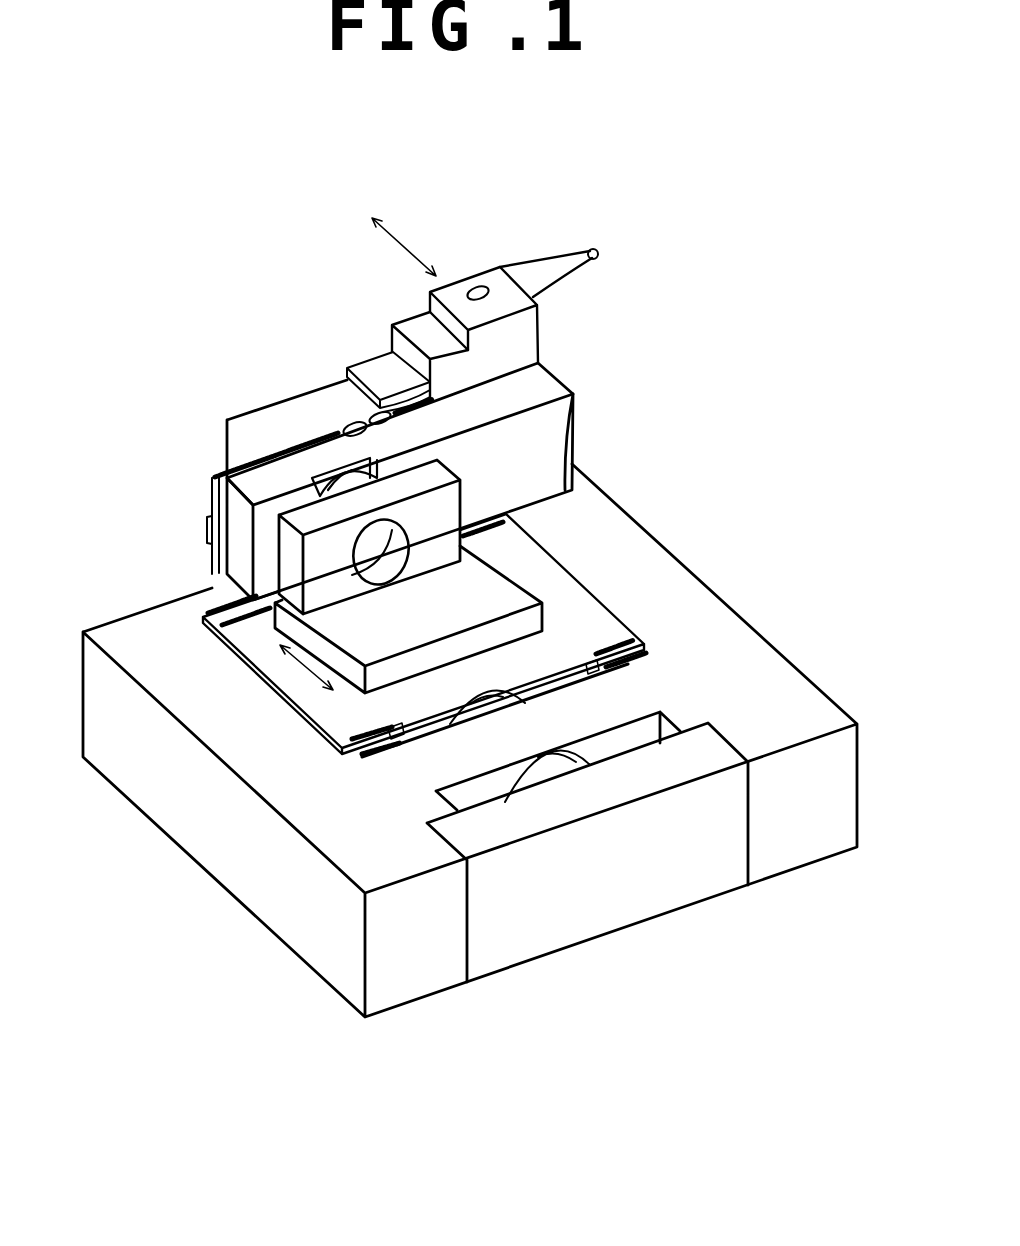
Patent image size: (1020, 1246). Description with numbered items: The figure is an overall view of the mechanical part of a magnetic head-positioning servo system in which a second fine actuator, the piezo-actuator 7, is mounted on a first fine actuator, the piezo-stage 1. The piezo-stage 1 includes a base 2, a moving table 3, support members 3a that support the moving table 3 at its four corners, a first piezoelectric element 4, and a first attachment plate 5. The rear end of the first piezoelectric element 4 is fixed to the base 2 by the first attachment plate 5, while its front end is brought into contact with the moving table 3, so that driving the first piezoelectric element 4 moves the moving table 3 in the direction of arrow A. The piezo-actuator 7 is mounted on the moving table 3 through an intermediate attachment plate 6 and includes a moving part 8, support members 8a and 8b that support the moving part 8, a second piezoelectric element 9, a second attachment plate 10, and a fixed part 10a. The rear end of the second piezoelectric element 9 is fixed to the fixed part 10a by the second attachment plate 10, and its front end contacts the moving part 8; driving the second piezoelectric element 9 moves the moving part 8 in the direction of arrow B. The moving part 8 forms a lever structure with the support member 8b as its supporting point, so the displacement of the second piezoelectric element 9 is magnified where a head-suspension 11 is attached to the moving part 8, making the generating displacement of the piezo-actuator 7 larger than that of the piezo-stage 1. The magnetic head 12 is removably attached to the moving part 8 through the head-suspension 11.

The piezo-stage 1 is at (463, 662).
The base 2 is at (312, 950).
The moving table 3 is at (548, 582).
The support members 3a is at (620, 655).
The first piezoelectric element 4 is at (568, 770).
The first attachment plate 5 is at (648, 878).
The intermediate attachment plate 6 is at (417, 660).
The piezo-actuator 7 is at (375, 433).
The moving part 8 is at (366, 406).
The support member 8a is at (350, 417).
The support member 8b is at (200, 483).
The second piezoelectric element 9 is at (335, 485).
The second attachment plate 10 is at (290, 568).
The fixed part 10a is at (505, 400).
The head-suspension 11 is at (517, 270).
The magnetic head 12 is at (600, 251).